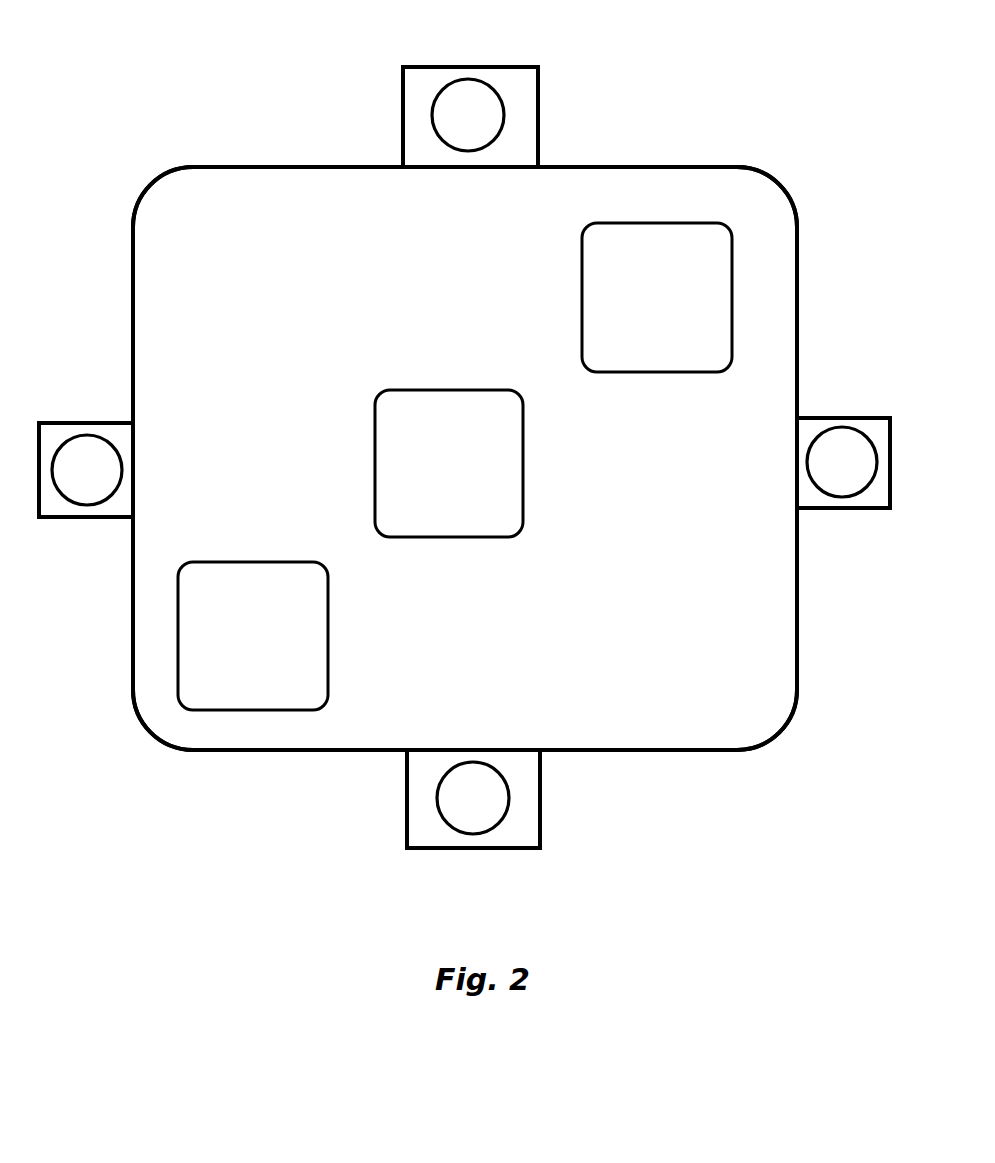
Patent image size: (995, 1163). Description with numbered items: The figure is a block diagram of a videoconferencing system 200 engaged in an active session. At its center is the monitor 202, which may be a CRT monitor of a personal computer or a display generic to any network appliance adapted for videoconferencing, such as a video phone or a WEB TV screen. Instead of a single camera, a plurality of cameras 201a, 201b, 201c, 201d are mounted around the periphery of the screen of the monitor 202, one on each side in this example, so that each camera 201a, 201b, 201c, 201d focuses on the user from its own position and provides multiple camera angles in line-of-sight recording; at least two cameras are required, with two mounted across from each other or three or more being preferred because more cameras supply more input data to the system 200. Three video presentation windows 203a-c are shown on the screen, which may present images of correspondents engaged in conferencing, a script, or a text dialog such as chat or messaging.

The videoconferencing system 200 is at (588, 158).
The monitor 202 is at (322, 167).
The camera 201a is at (465, 80).
The camera 201b is at (805, 462).
The camera 201c is at (470, 833).
The camera 201d is at (125, 472).
The video presentation windows 203a-c is at (358, 381).